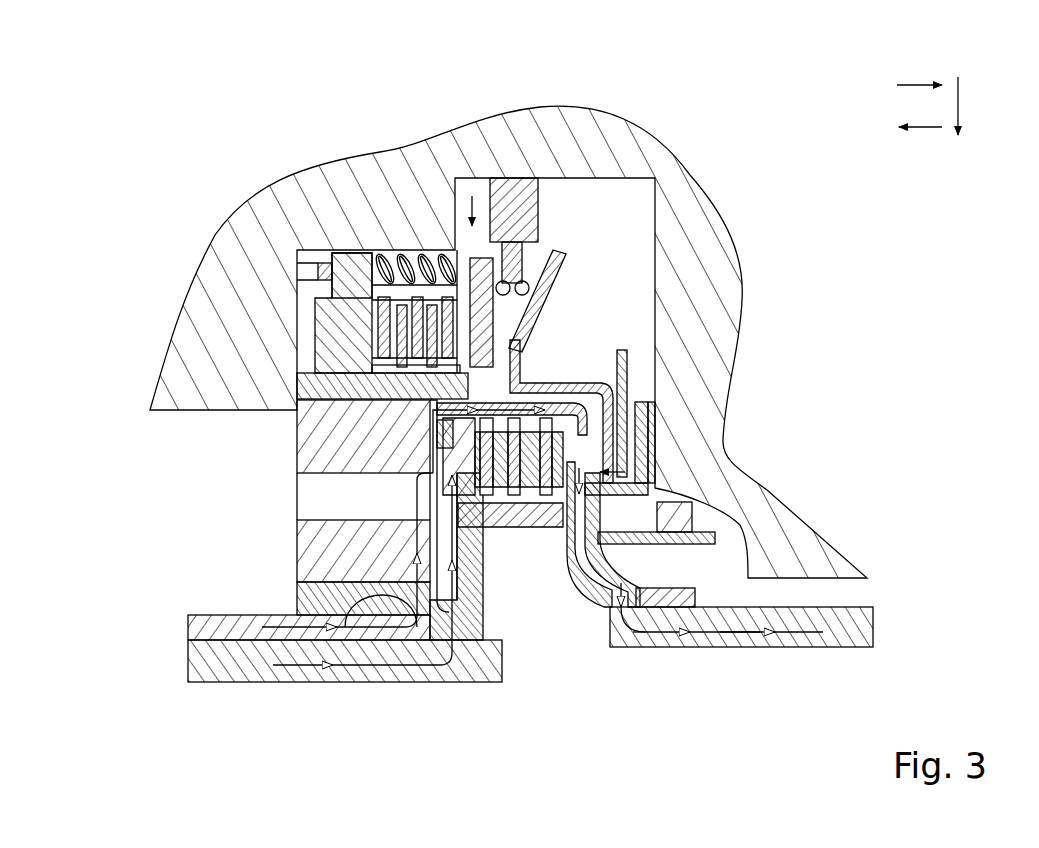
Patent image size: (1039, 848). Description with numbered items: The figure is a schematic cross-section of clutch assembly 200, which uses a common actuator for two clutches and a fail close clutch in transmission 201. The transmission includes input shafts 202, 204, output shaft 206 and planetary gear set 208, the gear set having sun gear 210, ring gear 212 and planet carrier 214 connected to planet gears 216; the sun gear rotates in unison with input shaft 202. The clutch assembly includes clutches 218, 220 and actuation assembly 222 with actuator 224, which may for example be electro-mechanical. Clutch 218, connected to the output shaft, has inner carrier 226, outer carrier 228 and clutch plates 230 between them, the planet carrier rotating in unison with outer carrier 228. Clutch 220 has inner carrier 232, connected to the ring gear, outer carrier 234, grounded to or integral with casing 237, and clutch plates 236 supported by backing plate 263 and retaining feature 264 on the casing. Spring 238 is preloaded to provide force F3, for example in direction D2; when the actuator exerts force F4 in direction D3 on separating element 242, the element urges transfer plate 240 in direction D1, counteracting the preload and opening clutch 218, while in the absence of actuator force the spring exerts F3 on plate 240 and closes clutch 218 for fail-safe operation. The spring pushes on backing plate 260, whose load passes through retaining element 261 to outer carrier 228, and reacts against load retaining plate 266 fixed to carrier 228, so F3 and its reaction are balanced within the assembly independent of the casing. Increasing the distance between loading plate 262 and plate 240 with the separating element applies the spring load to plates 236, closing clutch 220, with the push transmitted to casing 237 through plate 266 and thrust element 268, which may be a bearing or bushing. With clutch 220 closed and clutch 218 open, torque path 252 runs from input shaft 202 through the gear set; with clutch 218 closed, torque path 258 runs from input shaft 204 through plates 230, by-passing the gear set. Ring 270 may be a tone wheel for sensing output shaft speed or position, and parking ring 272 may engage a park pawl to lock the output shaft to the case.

The clutch assembly 200 is at (610, 203).
The transmission 201 is at (690, 76).
The input shaft 202 is at (250, 632).
The input shaft 204 is at (217, 660).
The output shaft 206 is at (873, 627).
The planetary gear set 208 is at (285, 497).
The sun gear 210 is at (300, 600).
The ring gear 212 is at (335, 395).
The planet carrier 214 is at (427, 437).
The planet gears 216 is at (323, 558).
The clutch 218 is at (531, 548).
The clutch 220 is at (383, 233).
The actuation assembly 222 is at (553, 190).
The actuator 224 is at (515, 177).
The inner carrier 226 is at (483, 565).
The outer carrier 228 is at (640, 450).
The clutch plates 230 is at (460, 457).
The inner carrier 232 is at (345, 335).
The outer carrier 234 is at (300, 278).
The clutch plates 236 is at (333, 297).
The casing 237 is at (777, 558).
The spring 238 is at (622, 368).
The transfer plate 240 is at (558, 252).
The separating element 242 is at (522, 263).
The torque path 252 is at (338, 618).
The torque path 258 is at (463, 655).
The backing plate 260 is at (433, 637).
The retaining element 261 is at (345, 368).
The loading plate 262 is at (455, 250).
The backing plate 263 is at (333, 253).
The retaining feature 264 is at (320, 262).
The load retaining plate 266 is at (590, 500).
The thrust element 268 is at (647, 410).
The ring 270 is at (665, 445).
The parking ring 272 is at (692, 517).
The force F3 is at (742, 592).
The force F4 is at (472, 195).
The direction D1 is at (924, 82).
The direction D2 is at (918, 131).
The direction D3 is at (960, 100).